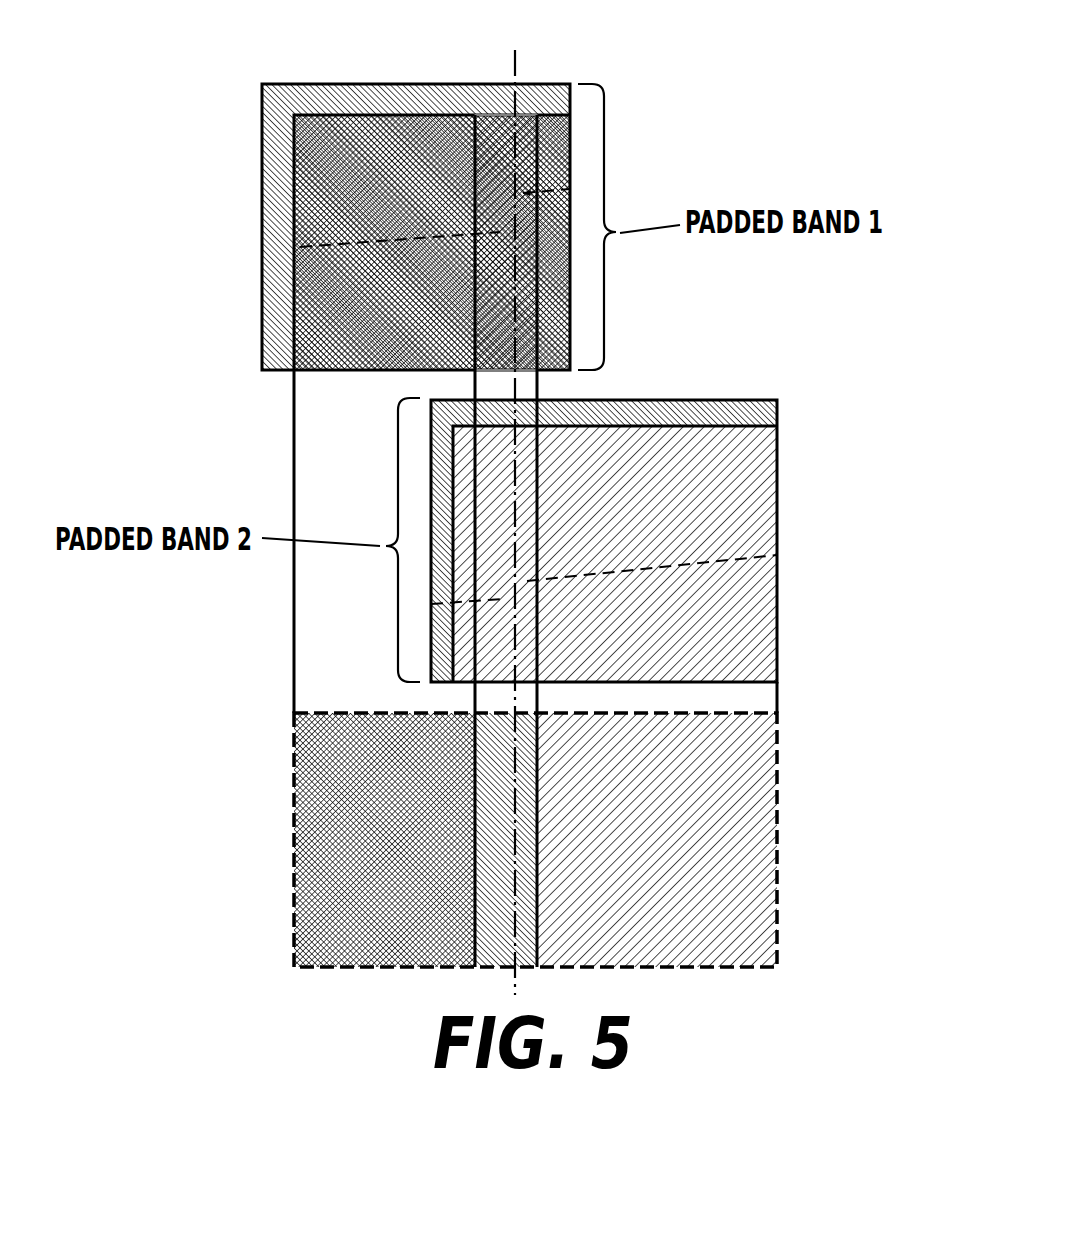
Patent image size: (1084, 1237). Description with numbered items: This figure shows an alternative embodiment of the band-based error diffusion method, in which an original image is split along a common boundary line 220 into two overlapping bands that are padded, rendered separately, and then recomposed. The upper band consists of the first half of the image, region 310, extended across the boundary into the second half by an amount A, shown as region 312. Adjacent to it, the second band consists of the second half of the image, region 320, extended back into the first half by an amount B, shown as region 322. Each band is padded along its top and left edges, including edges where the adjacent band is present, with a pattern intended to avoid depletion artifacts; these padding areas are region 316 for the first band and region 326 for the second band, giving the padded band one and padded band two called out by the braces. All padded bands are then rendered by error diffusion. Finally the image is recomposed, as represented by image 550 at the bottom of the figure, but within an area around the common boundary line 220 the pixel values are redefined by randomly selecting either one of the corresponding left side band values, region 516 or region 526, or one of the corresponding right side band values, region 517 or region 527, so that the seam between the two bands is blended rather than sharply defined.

The line 220 is at (515, 60).
The region 310 is at (413, 128).
The region 312 is at (570, 140).
The region 316 is at (272, 190).
The region 320 is at (760, 515).
The region 322 is at (450, 636).
The region 326 is at (705, 398).
The region 516 is at (300, 247).
The region 517 is at (570, 189).
The region 526 is at (431, 604).
The region 527 is at (777, 555).
The image 550 is at (780, 810).